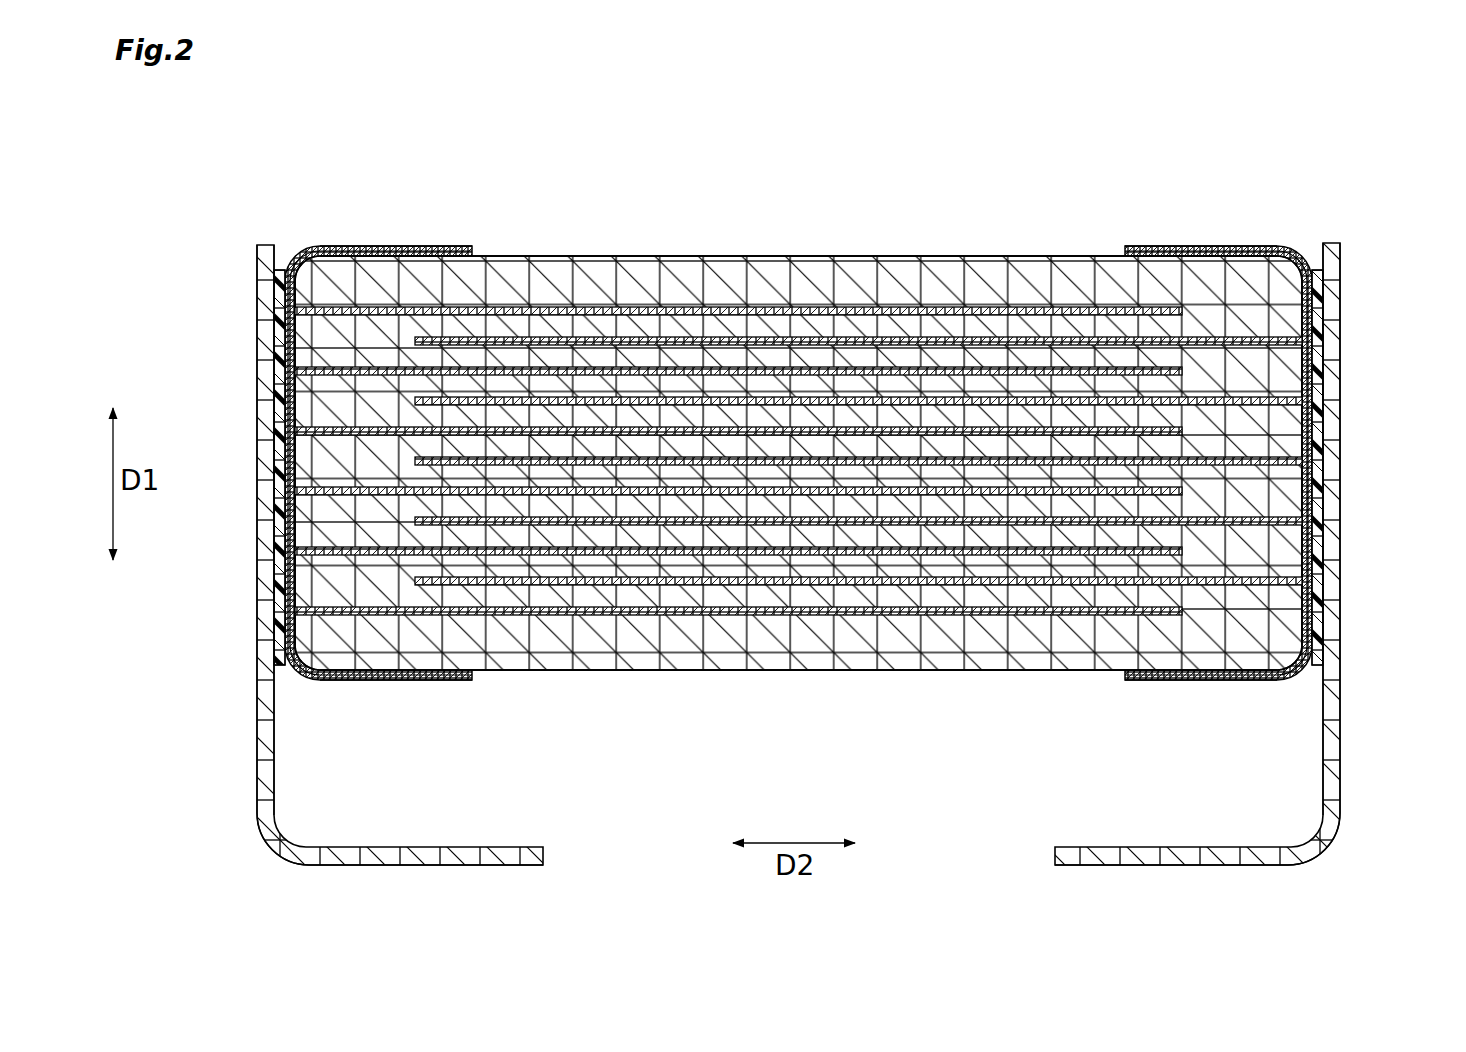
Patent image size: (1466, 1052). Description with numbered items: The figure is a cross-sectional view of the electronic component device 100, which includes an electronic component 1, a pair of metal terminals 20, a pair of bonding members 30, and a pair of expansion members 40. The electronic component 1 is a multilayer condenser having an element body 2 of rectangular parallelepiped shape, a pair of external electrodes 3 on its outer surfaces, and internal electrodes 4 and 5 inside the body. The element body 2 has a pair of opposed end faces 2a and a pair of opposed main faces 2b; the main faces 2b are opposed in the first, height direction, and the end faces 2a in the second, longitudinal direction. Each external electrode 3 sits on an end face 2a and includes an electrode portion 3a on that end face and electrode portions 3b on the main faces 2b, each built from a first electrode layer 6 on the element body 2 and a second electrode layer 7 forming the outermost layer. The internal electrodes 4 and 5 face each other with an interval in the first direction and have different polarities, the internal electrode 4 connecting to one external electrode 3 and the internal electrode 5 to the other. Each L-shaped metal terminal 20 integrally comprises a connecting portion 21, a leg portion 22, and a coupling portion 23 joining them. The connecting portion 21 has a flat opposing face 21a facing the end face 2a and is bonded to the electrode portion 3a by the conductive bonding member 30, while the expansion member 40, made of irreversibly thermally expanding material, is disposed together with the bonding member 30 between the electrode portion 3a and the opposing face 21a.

The electronic component 1 is at (967, 240).
The element body 2 is at (583, 253).
The end face 2a is at (288, 405).
The main face 2b is at (757, 255).
The external electrode 3 is at (470, 151).
The electrode portion 3a is at (287, 505).
The electrode portion 3b is at (337, 243).
The internal electrode 4 is at (715, 370).
The internal electrode 5 is at (905, 395).
The first electrode layer 6 is at (432, 247).
The second electrode layer 7 is at (378, 247).
The metal terminal 20 is at (255, 695).
The connecting portion 21 is at (258, 760).
The opposing face 21a is at (273, 308).
The leg portion 22 is at (432, 858).
The coupling portion 23 is at (272, 848).
The bonding member 30 is at (279, 462).
The expansion member 40 is at (282, 250).
The electronic component device 100 is at (1385, 208).